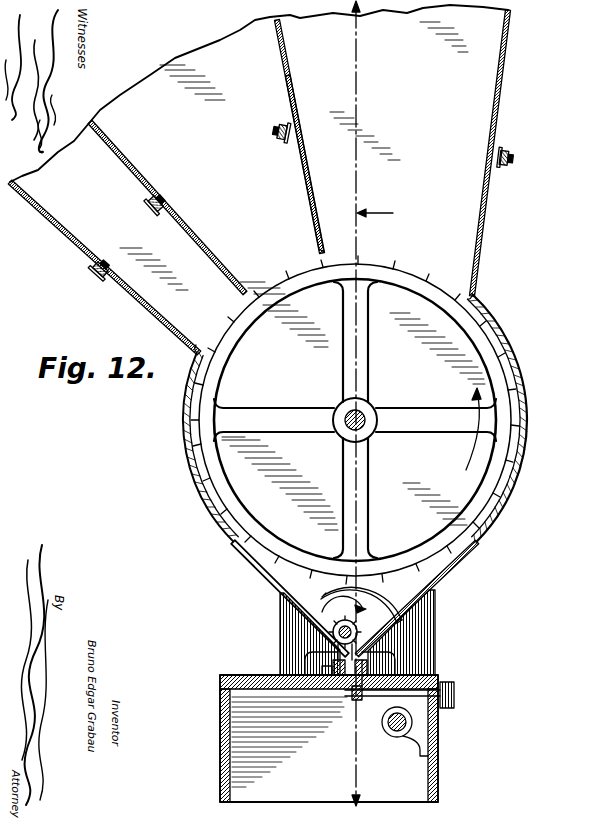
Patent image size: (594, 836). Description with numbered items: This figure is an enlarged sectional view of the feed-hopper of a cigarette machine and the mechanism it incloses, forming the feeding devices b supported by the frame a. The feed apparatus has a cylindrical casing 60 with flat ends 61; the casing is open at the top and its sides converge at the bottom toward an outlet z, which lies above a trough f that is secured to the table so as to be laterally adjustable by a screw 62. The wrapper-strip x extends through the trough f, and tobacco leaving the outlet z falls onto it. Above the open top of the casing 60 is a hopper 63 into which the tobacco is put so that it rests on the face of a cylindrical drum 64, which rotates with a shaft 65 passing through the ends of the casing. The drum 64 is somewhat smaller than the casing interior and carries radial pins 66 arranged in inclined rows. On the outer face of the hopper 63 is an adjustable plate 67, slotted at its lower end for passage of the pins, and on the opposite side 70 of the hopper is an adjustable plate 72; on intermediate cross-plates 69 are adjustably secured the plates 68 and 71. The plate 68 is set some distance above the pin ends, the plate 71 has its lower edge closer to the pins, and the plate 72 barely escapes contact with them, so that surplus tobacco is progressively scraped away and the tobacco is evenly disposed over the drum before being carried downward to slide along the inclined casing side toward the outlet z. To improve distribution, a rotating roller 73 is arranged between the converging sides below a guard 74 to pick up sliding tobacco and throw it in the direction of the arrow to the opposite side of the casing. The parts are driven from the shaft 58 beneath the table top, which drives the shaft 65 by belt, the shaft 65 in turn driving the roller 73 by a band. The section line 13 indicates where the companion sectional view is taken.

The section line 13- 13 is at (359, 403).
The shaft 58 is at (404, 734).
The cylindrical casing 60 is at (196, 461).
The flat ends 61 is at (520, 384).
The screw 62 is at (455, 694).
The hopper 63 is at (259, 267).
The cylindrical drum 64 is at (486, 347).
The shaft 65 is at (366, 413).
The radial pins 66 is at (528, 448).
The adjustable plate 67 is at (487, 249).
The plate 68 is at (313, 196).
The intermediate cross-plates 69 is at (104, 144).
The opposite side of the hopper 70 is at (104, 266).
The plate 71 is at (182, 231).
The adjustable plate 72 is at (147, 296).
The rotating roller 73 is at (332, 628).
The guard 74 is at (436, 592).
The frame a is at (221, 710).
The feeding devices b is at (112, 420).
The trough f is at (332, 660).
The outlet z is at (375, 652).
The wrapper-strip x is at (340, 675).